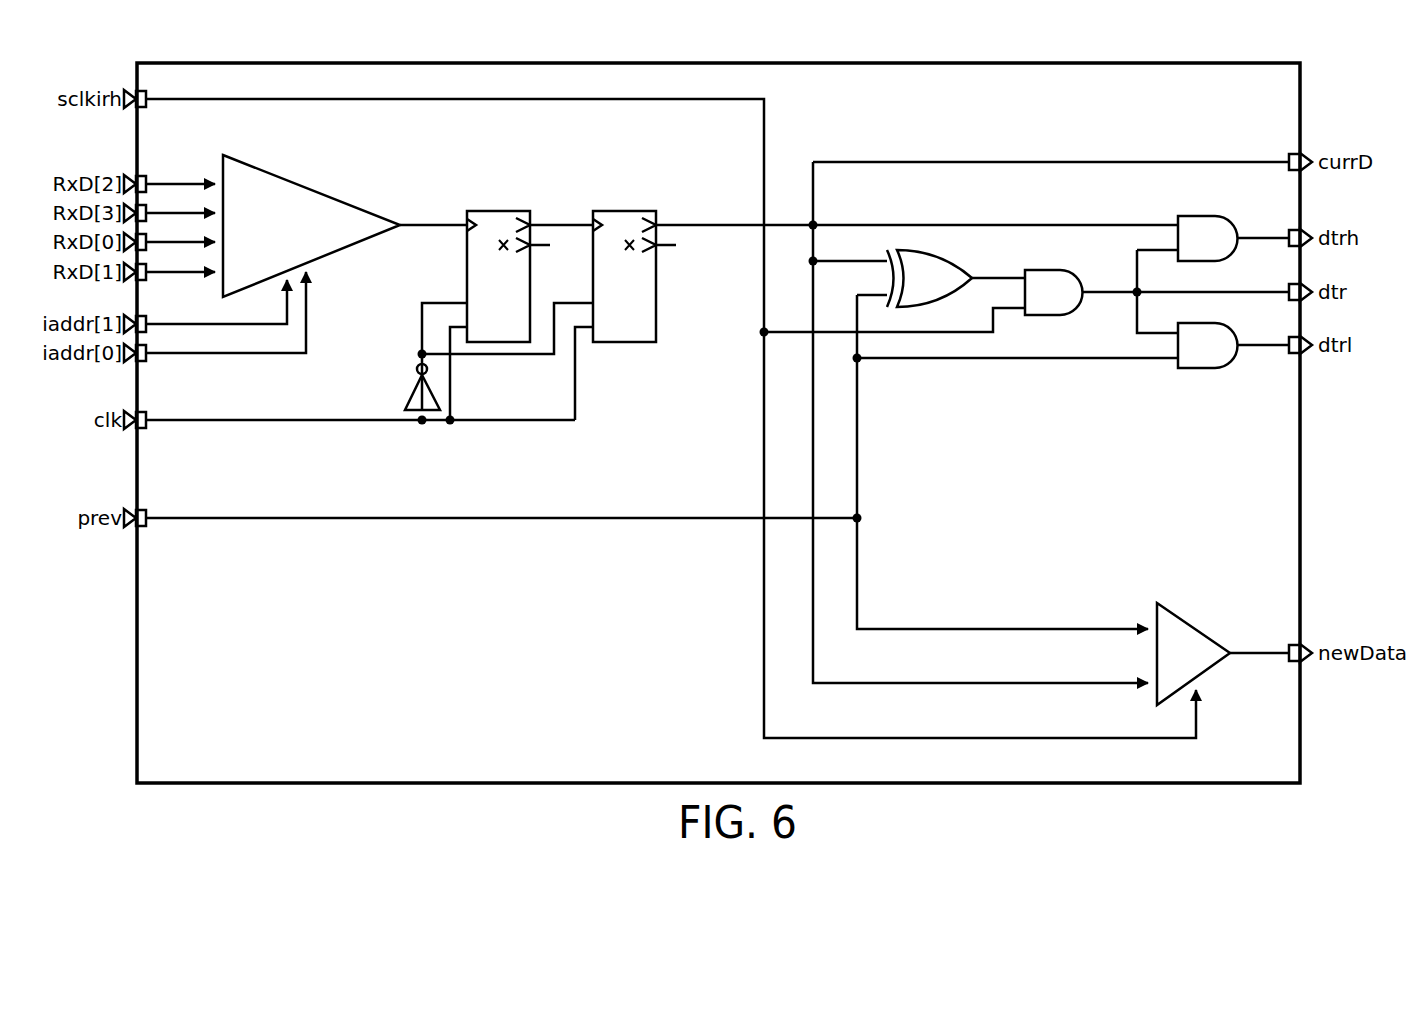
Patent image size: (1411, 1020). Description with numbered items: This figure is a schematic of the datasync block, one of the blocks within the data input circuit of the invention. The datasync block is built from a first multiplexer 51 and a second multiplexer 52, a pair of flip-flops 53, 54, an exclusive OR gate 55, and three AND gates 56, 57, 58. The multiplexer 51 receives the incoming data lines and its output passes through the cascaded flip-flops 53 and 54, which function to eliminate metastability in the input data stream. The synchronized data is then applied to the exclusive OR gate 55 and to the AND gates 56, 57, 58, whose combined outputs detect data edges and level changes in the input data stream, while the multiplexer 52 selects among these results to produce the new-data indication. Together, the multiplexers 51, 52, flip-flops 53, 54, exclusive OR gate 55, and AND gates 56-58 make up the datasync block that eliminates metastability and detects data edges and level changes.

The multiplexer 51 is at (307, 187).
The multiplexer 52 is at (1193, 626).
The flip-flop 53 is at (508, 276).
The flip-flop 54 is at (634, 276).
The exclusive OR gate 55 is at (945, 257).
The AND gate 56 is at (1046, 270).
The AND gate 57 is at (1198, 323).
The AND gate 58 is at (1198, 216).